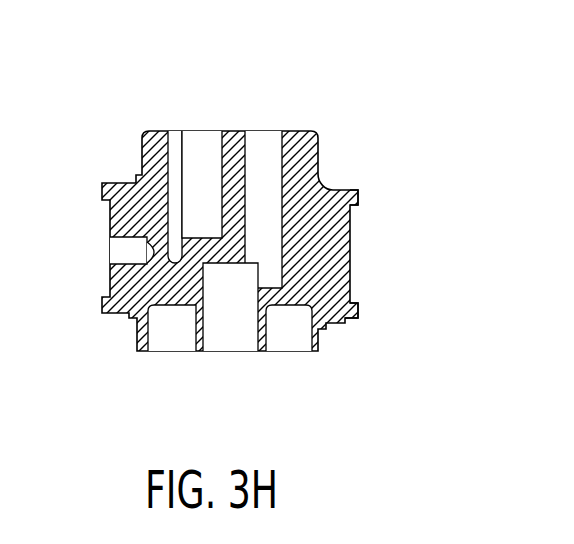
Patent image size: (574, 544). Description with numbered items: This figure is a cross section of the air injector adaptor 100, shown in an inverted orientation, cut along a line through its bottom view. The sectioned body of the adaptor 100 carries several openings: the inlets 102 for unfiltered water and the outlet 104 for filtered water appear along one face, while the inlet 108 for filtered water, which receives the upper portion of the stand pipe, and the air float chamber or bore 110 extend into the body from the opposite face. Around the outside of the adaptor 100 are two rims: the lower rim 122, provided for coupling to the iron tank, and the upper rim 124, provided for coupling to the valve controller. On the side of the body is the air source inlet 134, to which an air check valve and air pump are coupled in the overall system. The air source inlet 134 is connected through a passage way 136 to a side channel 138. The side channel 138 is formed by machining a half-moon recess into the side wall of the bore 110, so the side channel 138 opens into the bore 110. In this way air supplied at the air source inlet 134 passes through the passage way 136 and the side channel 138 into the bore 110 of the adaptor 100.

The air injector adaptor 100 is at (177, 90).
The inlets for unfiltered water 102 is at (175, 338).
The outlet for filtered water 104 is at (217, 332).
The inlet for filtered water 108 is at (270, 150).
The air float chamber or bore 110 is at (197, 150).
The lower rim 122 is at (358, 308).
The upper rim 124 is at (358, 193).
The air source inlet 134 is at (113, 260).
The passage way 136 is at (156, 248).
The side channel 138 is at (168, 131).